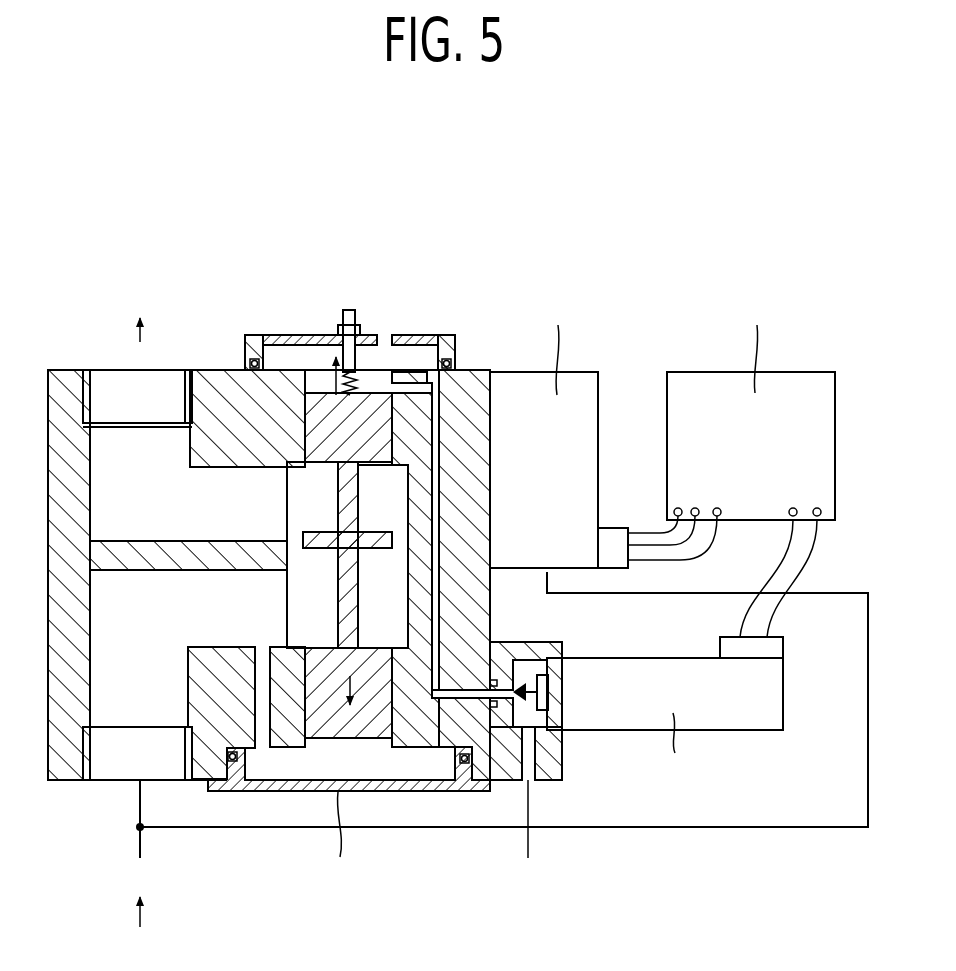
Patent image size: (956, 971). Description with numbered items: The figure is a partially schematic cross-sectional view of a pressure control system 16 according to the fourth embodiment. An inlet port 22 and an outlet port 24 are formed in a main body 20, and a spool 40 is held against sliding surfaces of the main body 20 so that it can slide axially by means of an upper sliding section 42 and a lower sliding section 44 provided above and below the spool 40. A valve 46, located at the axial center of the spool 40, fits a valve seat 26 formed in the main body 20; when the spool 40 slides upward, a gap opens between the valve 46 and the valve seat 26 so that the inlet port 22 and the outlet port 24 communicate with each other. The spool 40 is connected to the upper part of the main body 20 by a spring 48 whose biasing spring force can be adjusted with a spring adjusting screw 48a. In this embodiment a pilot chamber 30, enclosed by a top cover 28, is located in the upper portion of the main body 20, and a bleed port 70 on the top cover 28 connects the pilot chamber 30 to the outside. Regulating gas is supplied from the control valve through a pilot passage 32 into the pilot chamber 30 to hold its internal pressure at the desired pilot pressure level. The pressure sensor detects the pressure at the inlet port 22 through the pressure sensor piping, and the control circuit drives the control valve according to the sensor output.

The pressure control system 16 is at (98, 322).
The main body 20 is at (62, 638).
The inlet port 22 is at (118, 770).
The outlet port 24 is at (107, 385).
The valve seat 26 is at (298, 560).
The top cover 28 is at (443, 345).
The pilot chamber 30 is at (300, 345).
The pilot passage 32 is at (440, 432).
The spool 40 is at (392, 503).
The upper sliding section 42 is at (313, 452).
The lower sliding section 44 is at (318, 655).
The valve 46 is at (315, 538).
The spring 48 is at (363, 345).
The spring adjusting screw 48a is at (353, 310).
The bleed port 70 is at (377, 343).